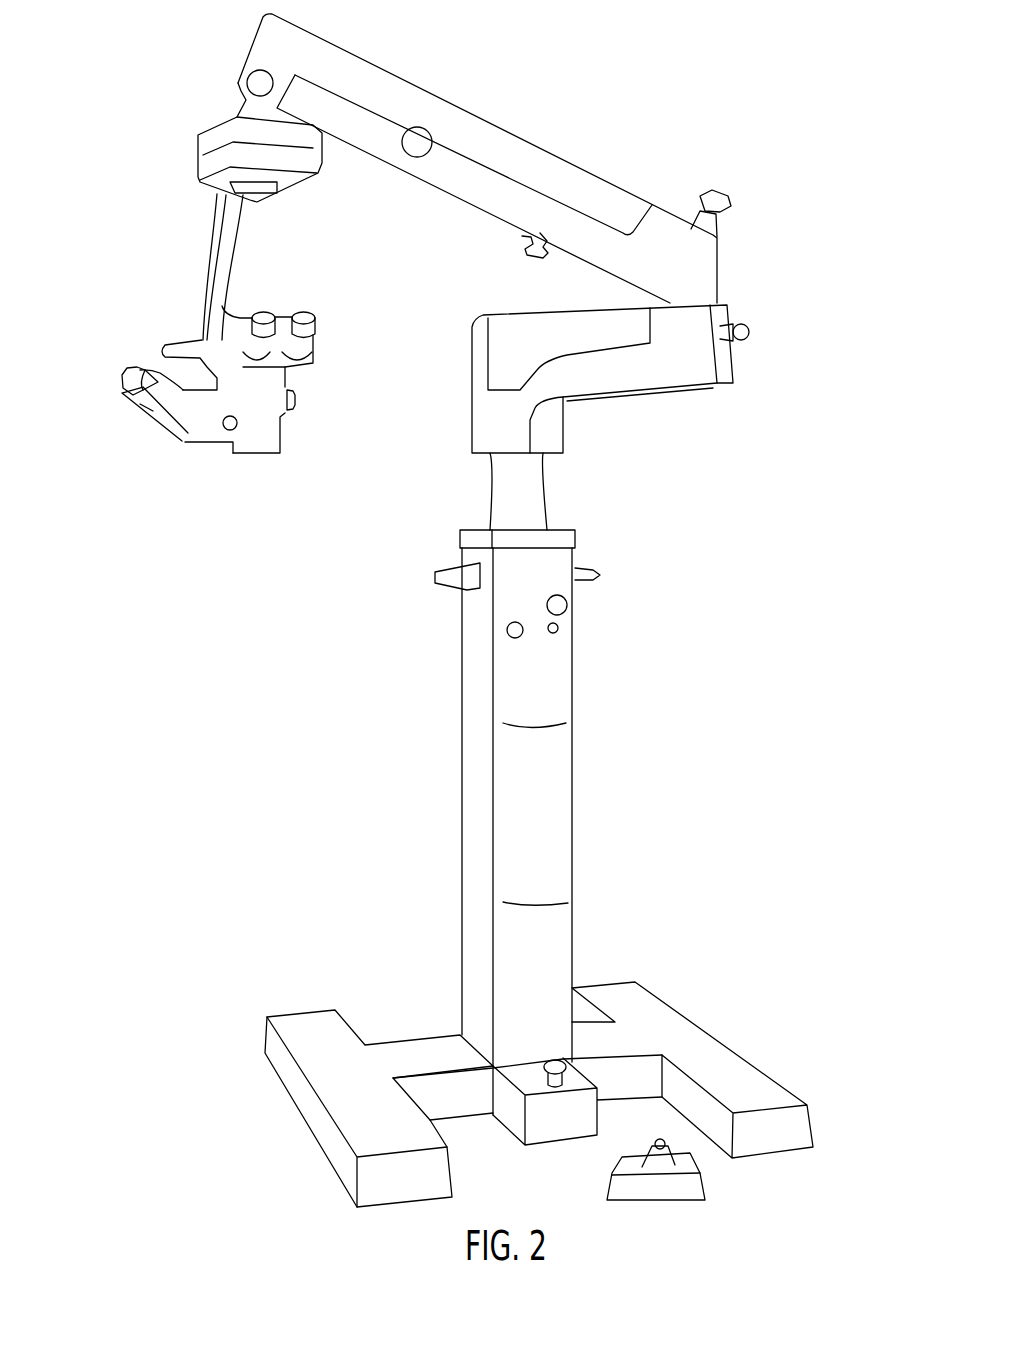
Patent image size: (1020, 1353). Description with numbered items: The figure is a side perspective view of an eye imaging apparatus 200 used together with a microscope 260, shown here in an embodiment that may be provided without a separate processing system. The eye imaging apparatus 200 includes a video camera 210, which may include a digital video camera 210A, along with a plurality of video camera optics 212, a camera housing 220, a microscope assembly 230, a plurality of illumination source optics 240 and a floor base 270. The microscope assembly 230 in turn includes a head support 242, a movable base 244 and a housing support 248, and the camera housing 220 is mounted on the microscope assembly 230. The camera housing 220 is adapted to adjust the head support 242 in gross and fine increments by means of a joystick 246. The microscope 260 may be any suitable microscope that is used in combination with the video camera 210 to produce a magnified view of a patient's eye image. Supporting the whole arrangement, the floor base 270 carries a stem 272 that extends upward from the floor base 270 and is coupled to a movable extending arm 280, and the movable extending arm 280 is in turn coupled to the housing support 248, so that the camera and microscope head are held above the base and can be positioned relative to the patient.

The eye imaging apparatus 200 is at (150, 255).
The movable extending arm 280 is at (638, 178).
The housing support 248 is at (227, 274).
The video camera 210 is at (320, 347).
The digital video camera 210A is at (300, 347).
The video camera optics 212 is at (273, 397).
The camera housing 220 is at (287, 388).
The illumination source optics 240 is at (297, 398).
The head support 242 is at (287, 415).
The movable base 244 is at (288, 470).
The microscope 260 is at (118, 370).
The microscope assembly 230 is at (175, 415).
The stem 272 is at (548, 788).
The floor base 270 is at (693, 1020).
The joystick 246 is at (657, 1173).